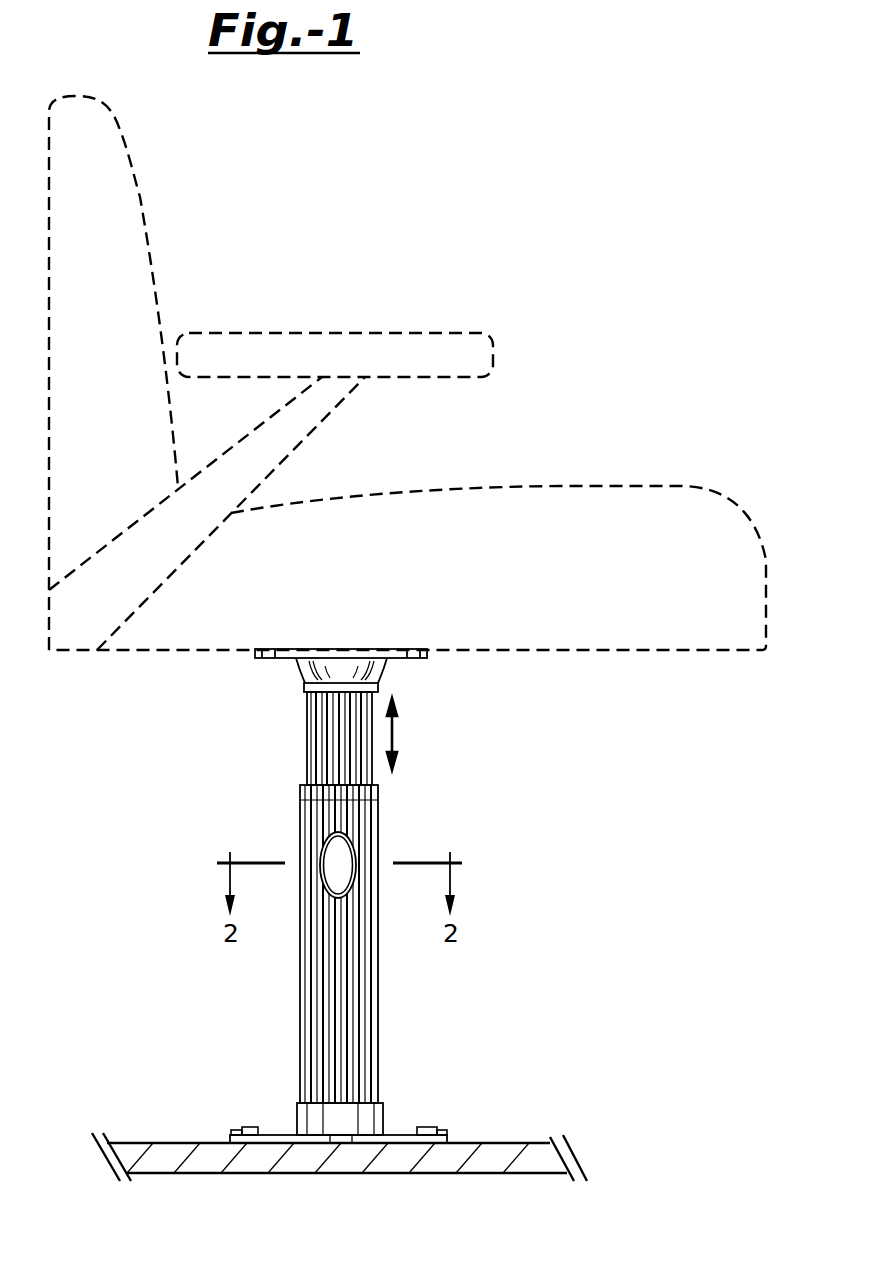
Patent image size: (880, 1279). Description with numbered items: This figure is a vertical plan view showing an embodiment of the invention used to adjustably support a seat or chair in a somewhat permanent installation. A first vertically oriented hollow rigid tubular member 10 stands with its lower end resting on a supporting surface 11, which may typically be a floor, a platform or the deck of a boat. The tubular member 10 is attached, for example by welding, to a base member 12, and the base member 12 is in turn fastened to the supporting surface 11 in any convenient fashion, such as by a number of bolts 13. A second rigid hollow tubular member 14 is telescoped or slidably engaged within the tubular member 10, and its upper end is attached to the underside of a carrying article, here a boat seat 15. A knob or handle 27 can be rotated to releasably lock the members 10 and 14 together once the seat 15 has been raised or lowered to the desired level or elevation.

The first tubular member 10 is at (377, 1047).
The supporting surface 11 is at (480, 1143).
The base member 12 is at (275, 1135).
The bolts 13 is at (247, 1133).
The second tubular member 14 is at (308, 758).
The boat seat 15 is at (542, 487).
The knob or handle 27 is at (355, 842).